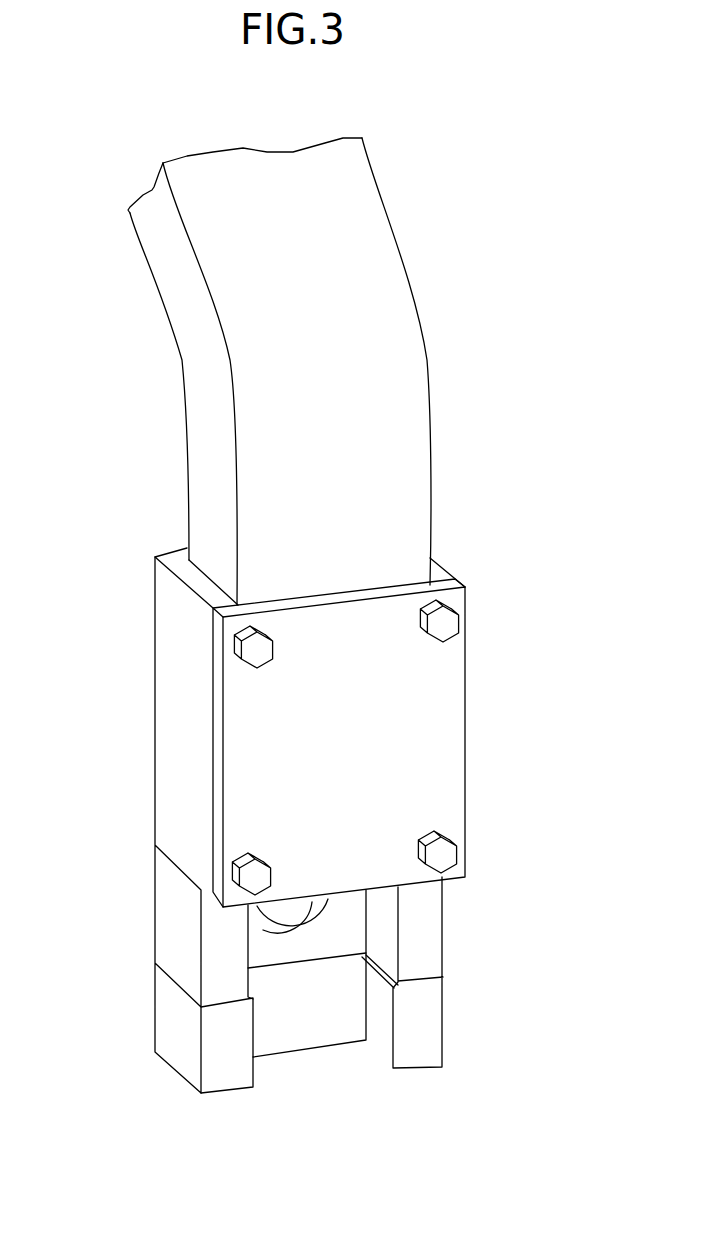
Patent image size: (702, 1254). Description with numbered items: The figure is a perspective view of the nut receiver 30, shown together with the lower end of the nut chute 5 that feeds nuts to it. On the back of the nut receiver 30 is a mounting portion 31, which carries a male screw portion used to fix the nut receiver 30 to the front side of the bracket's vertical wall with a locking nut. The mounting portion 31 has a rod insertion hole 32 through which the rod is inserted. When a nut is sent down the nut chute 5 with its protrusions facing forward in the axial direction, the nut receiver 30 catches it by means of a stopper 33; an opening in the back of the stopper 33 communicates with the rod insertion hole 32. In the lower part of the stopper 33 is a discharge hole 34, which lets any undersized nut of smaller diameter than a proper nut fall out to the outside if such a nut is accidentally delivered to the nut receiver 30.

The nut chute 5 is at (388, 260).
The nut receiver 30 is at (308, 860).
The mounting portion 31 is at (155, 790).
The rod insertion hole 32 is at (287, 910).
The stopper 33 is at (382, 978).
The discharge hole 34 is at (312, 1067).